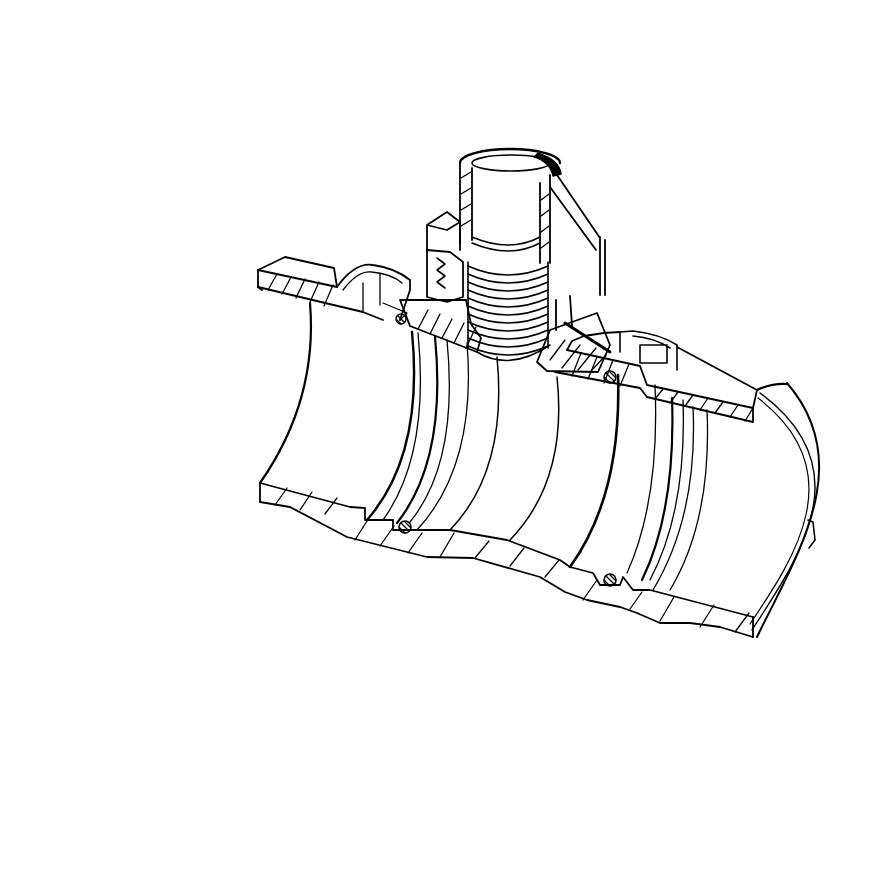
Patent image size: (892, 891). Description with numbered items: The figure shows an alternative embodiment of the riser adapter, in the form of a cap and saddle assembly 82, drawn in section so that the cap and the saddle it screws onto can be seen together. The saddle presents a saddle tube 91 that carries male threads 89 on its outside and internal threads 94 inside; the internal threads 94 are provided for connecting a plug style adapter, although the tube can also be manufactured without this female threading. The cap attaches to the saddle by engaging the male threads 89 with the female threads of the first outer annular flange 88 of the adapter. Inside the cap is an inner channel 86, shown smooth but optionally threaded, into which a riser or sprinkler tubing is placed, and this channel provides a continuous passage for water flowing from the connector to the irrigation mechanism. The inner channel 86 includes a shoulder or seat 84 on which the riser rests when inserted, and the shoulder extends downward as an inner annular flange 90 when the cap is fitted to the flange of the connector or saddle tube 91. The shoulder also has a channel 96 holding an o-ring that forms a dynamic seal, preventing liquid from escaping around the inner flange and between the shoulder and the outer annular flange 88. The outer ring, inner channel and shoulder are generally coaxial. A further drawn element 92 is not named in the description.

The cap and saddle assembly 82 is at (232, 152).
The shoulder or seat 84 is at (533, 240).
The inner channel 86 is at (512, 172).
The outer annular flange 88 is at (432, 258).
The male threads 89 is at (433, 287).
The inner annular flange 90 is at (543, 263).
The saddle tube 91 is at (460, 302).
The gasket 92 is at (540, 291).
The internal threads 94 is at (547, 330).
The channel 96 is at (455, 245).